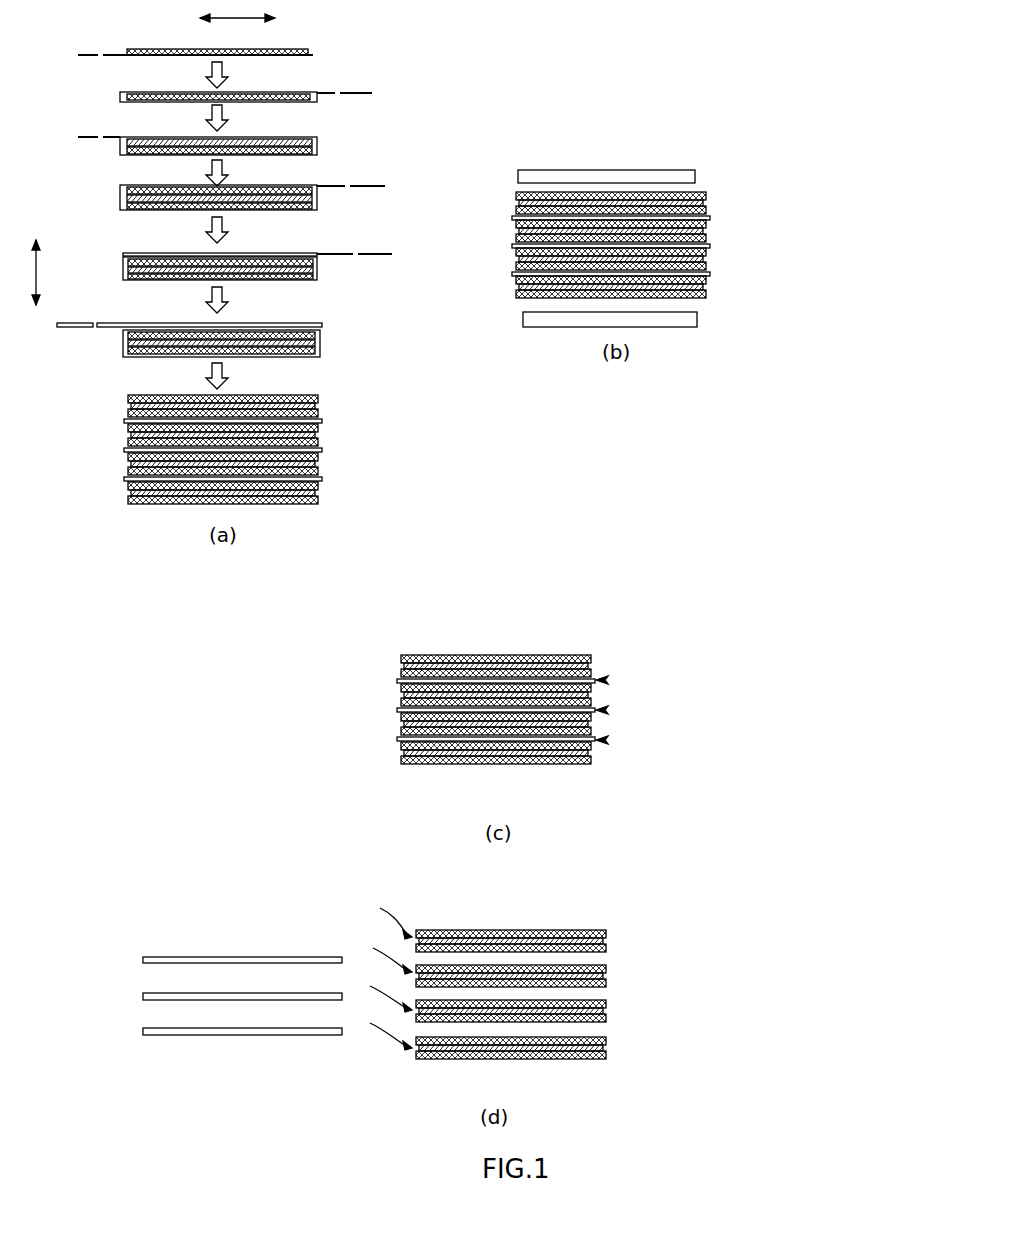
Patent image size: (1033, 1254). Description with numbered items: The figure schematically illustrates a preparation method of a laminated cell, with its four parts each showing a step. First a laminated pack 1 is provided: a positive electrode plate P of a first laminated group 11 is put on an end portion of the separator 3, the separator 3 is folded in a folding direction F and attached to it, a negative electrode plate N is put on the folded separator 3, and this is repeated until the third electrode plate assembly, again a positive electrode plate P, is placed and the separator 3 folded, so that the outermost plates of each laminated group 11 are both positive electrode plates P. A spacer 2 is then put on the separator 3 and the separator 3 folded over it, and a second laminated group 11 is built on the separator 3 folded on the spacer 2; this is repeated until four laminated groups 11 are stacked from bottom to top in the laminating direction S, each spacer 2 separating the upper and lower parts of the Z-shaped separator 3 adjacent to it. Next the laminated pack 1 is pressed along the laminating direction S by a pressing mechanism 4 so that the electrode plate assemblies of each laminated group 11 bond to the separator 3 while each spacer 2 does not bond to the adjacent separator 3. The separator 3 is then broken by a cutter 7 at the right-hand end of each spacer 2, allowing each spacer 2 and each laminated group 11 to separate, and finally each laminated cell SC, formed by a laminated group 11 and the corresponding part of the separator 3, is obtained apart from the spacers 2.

The laminated pack 1 is at (474, 633).
The spacer 2 is at (123, 255).
The separator 3 is at (112, 55).
The pressing mechanism 4 is at (530, 178).
The cutter 7 is at (608, 680).
The laminated group 11 is at (662, 1124).
The positive electrode plate P is at (300, 50).
The negative electrode plate N is at (127, 143).
The laminating direction S is at (44, 272).
The folding direction F is at (237, 11).
The laminated cell SC is at (379, 969).